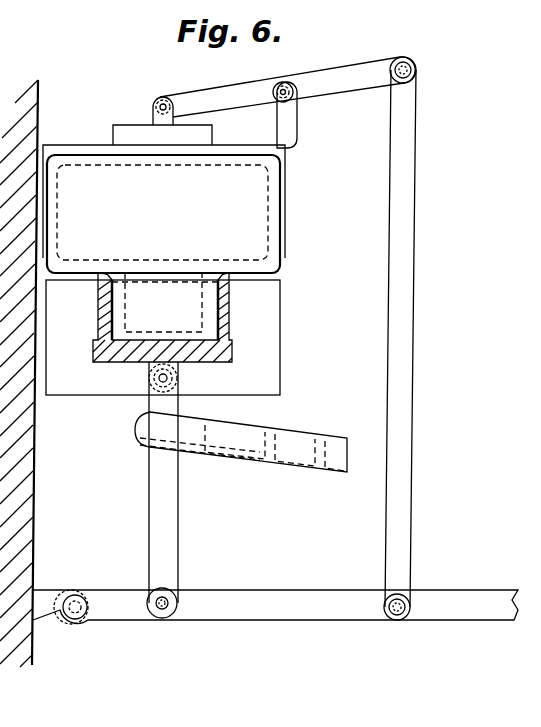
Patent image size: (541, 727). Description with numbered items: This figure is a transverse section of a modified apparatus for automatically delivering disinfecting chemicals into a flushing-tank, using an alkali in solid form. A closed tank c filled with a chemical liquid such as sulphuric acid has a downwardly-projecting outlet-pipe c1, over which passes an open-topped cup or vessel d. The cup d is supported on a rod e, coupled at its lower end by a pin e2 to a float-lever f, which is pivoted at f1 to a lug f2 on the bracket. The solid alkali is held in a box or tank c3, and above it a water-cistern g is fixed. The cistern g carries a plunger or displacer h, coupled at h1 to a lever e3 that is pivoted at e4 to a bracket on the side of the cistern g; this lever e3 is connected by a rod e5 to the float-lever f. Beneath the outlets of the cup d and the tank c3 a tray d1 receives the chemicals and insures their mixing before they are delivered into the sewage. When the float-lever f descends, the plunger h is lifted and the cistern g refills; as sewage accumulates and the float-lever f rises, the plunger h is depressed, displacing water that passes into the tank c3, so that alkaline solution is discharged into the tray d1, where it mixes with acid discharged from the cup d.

The plunger or displacer h is at (126, 131).
The coupling of plunger to lever h1 is at (158, 103).
The lever e3 is at (287, 87).
The pivot of lever e4 is at (283, 86).
The water-cistern g is at (285, 212).
The tank or vessel c is at (163, 214).
The outlet-pipe c1 is at (165, 302).
The box or tank c3 is at (163, 337).
The cup or vessel d is at (226, 313).
The tray d1 is at (241, 442).
The rod e is at (163, 482).
The rod e5 is at (400, 338).
The pin e2 is at (170, 606).
The float-lever f is at (313, 593).
The pivot of float-lever f1 is at (78, 604).
The lug f2 is at (41, 595).